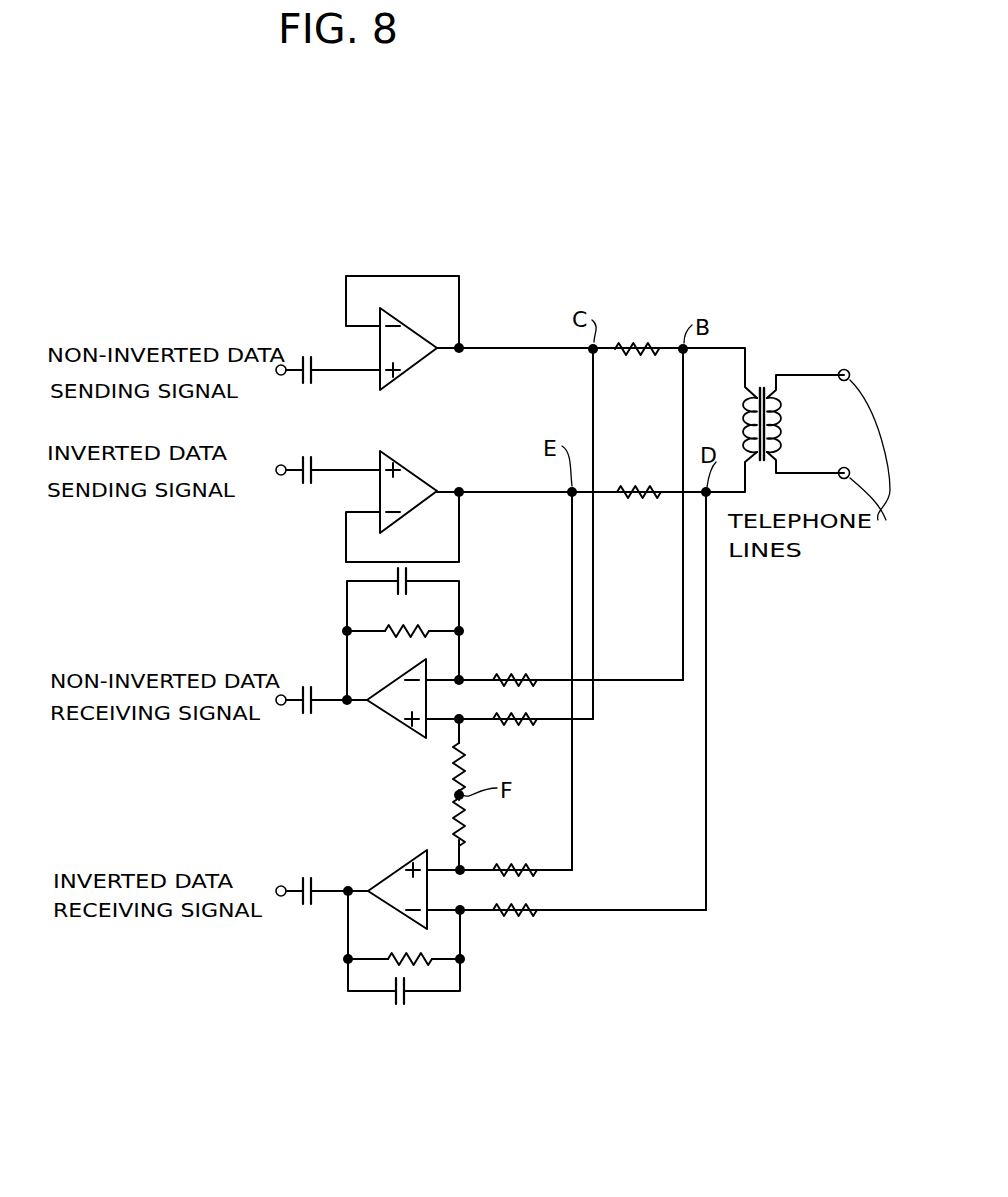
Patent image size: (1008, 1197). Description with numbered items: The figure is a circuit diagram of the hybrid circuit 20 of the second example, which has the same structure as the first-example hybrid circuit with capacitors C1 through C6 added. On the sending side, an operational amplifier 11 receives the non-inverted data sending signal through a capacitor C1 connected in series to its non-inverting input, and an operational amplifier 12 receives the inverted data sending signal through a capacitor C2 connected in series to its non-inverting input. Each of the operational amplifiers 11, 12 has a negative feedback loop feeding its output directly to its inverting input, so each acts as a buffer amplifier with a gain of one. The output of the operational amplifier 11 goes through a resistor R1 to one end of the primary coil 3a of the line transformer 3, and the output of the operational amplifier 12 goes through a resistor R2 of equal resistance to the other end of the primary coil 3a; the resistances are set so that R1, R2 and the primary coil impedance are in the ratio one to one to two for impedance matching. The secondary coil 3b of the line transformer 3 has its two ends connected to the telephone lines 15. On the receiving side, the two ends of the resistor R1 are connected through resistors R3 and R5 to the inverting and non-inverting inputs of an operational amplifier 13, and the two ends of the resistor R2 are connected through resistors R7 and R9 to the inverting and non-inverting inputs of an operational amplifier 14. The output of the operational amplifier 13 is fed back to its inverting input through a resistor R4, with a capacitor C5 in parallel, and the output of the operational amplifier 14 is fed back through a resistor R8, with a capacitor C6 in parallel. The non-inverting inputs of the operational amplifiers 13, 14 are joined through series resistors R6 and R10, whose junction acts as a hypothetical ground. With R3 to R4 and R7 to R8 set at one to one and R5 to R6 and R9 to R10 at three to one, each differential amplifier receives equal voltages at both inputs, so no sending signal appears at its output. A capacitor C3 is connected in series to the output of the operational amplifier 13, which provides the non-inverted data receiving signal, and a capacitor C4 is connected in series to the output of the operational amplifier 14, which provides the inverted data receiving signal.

The hybrid circuit 20 is at (612, 237).
The operational amplifier 11 is at (417, 357).
The operational amplifier 12 is at (418, 482).
The operational amplifier 13 is at (398, 712).
The operational amplifier 14 is at (395, 875).
The line transformer 3 is at (765, 376).
The primary coil 3a is at (740, 418).
The secondary coil 3b is at (788, 412).
The telephone lines 15 is at (805, 372).
The resistor R1 is at (637, 336).
The resistor R2 is at (639, 479).
The resistor R3 is at (515, 666).
The resistor R4 is at (403, 647).
The resistor R5 is at (520, 740).
The resistor R6 is at (442, 767).
The resistor R7 is at (515, 930).
The resistor R8 is at (404, 946).
The resistor R9 is at (515, 856).
The resistor R10 is at (434, 822).
The capacitor C1 is at (310, 387).
The capacitor C2 is at (309, 490).
The capacitor C3 is at (307, 722).
The capacitor C4 is at (305, 913).
The capacitor C5 is at (415, 593).
The capacitor C6 is at (409, 1007).